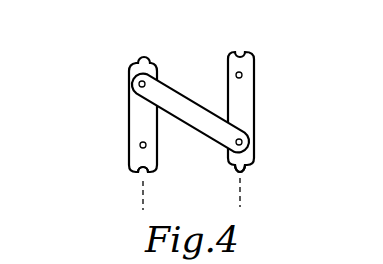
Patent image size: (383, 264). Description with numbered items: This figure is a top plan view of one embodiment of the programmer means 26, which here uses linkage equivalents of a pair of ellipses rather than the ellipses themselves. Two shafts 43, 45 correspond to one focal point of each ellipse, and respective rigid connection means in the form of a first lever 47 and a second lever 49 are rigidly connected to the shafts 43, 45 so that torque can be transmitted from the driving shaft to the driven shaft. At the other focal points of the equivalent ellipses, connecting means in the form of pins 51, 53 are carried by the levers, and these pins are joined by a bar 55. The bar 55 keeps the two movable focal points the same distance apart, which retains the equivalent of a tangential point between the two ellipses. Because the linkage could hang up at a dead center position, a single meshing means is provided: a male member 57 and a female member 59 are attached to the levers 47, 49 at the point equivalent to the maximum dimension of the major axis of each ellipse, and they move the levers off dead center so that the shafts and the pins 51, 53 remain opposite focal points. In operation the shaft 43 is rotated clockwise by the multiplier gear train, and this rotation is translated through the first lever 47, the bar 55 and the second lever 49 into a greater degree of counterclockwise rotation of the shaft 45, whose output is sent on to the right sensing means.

The programmer means 26 is at (188, 50).
The shaft 43 is at (242, 75).
The shaft 45 is at (139, 145).
The first lever 47 is at (246, 107).
The second lever 49 is at (128, 118).
The pin 51 is at (232, 142).
The pin 53 is at (139, 84).
The bar 55 is at (189, 98).
The male member 57 is at (245, 171).
The female member 59 is at (143, 177).